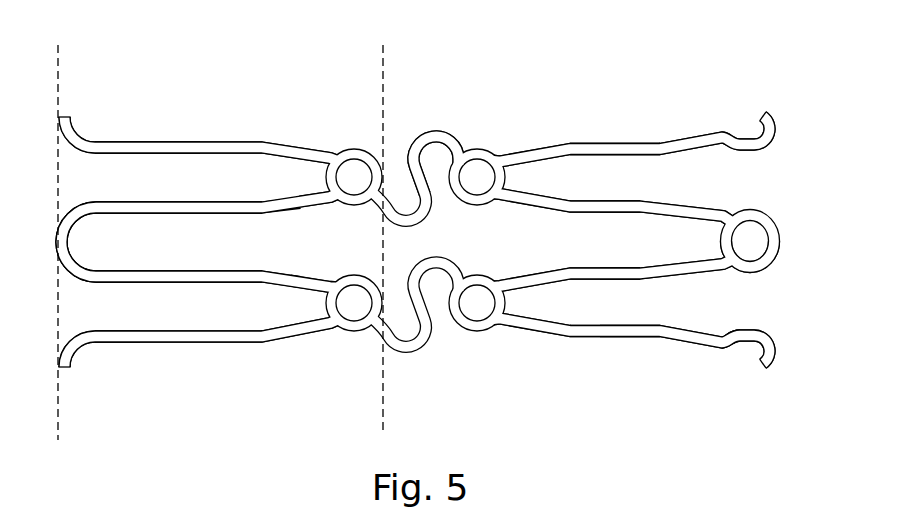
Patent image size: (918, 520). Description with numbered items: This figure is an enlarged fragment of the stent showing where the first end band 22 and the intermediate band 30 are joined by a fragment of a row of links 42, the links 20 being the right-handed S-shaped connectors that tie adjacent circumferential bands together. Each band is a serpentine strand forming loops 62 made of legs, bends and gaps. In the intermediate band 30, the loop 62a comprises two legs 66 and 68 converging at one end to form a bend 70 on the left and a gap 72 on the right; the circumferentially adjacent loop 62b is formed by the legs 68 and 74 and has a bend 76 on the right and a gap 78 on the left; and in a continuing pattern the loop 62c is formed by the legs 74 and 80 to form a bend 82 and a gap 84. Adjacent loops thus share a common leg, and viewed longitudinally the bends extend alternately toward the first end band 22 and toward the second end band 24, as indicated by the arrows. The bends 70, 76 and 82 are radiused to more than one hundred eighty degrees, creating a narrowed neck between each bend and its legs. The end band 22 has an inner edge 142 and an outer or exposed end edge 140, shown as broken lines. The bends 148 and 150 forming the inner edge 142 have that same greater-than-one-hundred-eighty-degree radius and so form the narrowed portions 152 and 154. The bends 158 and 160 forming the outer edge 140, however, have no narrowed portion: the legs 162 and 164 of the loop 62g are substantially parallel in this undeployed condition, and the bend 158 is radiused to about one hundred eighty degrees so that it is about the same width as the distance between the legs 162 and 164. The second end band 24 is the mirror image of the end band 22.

The links 20 is at (407, 134).
The first end band 22 is at (104, 67).
The second end band 24 is at (625, 67).
The intermediate band 30 is at (630, 143).
The row of links 42 is at (439, 121).
The loops 62 is at (148, 141).
The loop 62a is at (650, 201).
The loop 62b is at (684, 263).
The loop 62c is at (713, 347).
The loop 62g is at (176, 214).
The leg 66 is at (596, 143).
The leg 68 is at (576, 201).
The bend 70 is at (478, 206).
The gap 72 is at (731, 193).
The leg 74 is at (586, 268).
The bend 76 is at (747, 274).
The gap 78 is at (476, 260).
The leg 80 is at (604, 337).
The bend 82 is at (479, 332).
The gap 84 is at (734, 323).
The outer edge 140 is at (62, 438).
The inner edge 142 is at (388, 392).
The bend 148 is at (349, 150).
The bend 150 is at (352, 332).
The narrowed portion 152 is at (72, 126).
The narrowed portion 154 is at (333, 282).
The bend 158 is at (69, 242).
The bend 160 is at (81, 347).
The leg 162 is at (193, 202).
The leg 164 is at (184, 282).